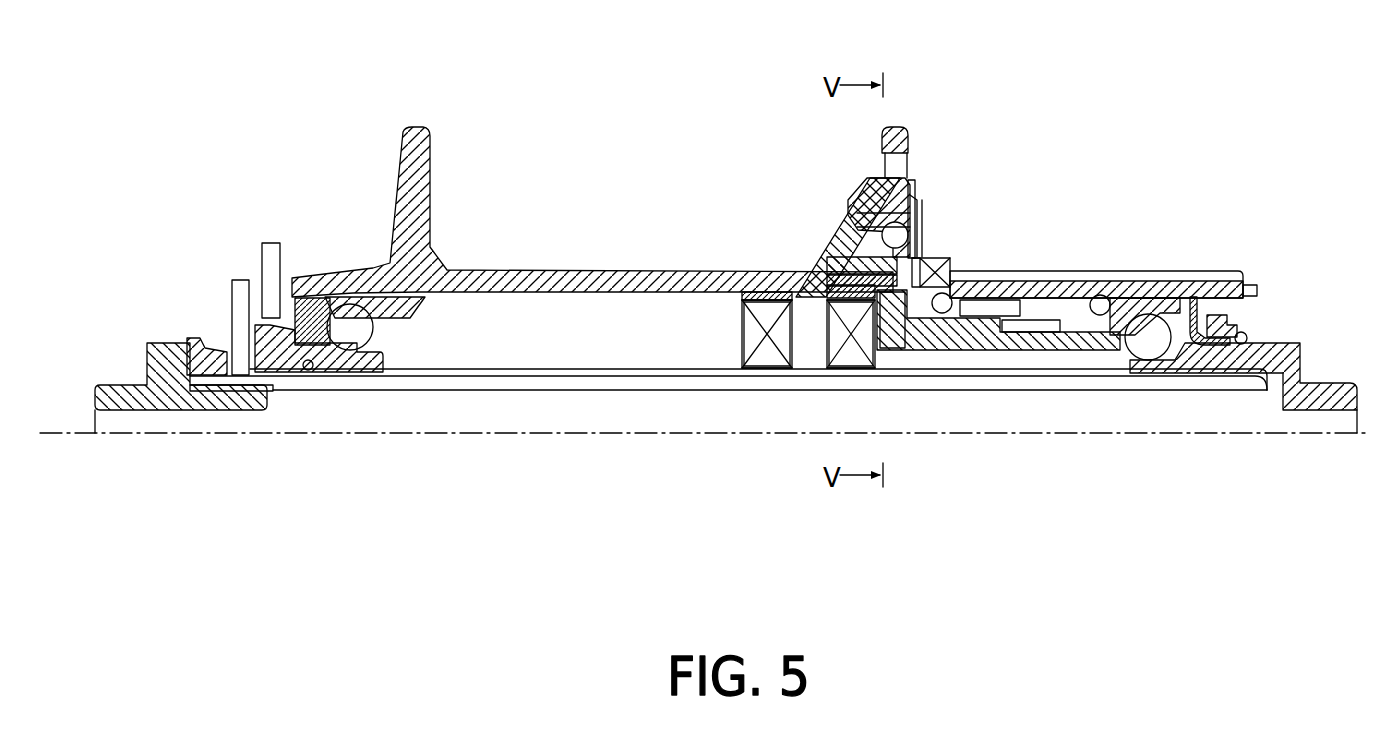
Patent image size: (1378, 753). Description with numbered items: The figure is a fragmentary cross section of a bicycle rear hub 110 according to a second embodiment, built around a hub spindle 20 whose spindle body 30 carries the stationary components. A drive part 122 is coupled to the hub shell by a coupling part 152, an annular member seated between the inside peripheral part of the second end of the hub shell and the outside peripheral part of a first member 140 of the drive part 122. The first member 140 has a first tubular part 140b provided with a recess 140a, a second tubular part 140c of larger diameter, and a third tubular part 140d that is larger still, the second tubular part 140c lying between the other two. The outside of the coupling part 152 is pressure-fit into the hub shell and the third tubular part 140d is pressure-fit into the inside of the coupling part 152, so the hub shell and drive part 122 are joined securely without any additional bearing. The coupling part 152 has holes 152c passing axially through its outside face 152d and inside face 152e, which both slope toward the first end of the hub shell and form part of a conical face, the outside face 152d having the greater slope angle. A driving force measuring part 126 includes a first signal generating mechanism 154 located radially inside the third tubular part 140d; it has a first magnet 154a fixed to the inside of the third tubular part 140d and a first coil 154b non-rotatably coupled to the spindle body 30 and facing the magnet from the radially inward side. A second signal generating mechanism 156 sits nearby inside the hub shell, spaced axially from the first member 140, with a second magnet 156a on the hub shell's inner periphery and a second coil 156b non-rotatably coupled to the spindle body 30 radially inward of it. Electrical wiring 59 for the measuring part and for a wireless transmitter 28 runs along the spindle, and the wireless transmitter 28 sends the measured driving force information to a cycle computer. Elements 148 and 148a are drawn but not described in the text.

The hub spindle 20 is at (522, 356).
The wireless transmitter 28 is at (270, 243).
The spindle body 30 is at (583, 362).
The electrical wiring 59 is at (493, 373).
The rear hub 110 is at (618, 199).
The drive part 122 is at (1012, 256).
The driving force measuring part 126 is at (728, 320).
The first member 140 is at (997, 357).
The recess 140a is at (1024, 302).
The first tubular part 140b is at (1032, 352).
The second tubular part 140c is at (910, 352).
The third tubular part 140d is at (835, 268).
The ball 148 is at (950, 292).
The ball seat 148a is at (933, 258).
The coupling part 152 is at (862, 210).
The holes 152c is at (893, 130).
The outside face 152d is at (916, 175).
The inside face 152e is at (855, 195).
The first signal generating mechanism 154 is at (830, 292).
The first magnet 154a is at (848, 362).
The first coil 154b is at (840, 352).
The second signal generating mechanism 156 is at (770, 292).
The second magnet 156a is at (760, 362).
The second coil 156b is at (745, 352).